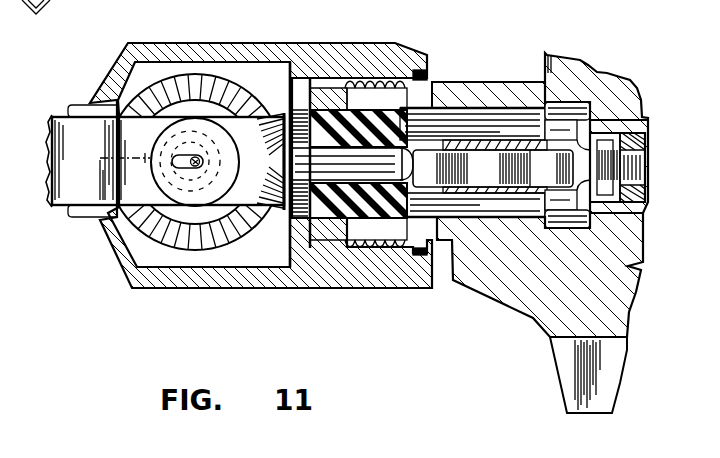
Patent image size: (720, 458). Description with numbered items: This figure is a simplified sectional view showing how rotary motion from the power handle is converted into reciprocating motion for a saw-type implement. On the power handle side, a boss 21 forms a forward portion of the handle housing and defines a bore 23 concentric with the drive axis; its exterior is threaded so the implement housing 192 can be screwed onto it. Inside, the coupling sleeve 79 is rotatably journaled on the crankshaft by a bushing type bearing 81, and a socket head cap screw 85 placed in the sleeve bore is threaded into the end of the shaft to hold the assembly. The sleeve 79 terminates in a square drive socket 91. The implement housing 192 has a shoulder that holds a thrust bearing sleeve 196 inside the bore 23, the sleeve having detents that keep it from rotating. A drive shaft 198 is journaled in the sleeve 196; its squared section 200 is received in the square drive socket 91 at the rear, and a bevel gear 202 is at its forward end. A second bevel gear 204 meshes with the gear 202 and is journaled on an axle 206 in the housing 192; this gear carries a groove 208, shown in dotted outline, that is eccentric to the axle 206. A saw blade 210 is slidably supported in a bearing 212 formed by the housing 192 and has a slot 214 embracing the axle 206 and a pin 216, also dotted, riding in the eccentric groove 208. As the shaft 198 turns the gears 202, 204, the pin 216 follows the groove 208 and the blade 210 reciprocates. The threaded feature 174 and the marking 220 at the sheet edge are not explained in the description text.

The adjacent figure reference 220 is at (25, 43).
The saw blade 210 is at (50, 115).
The groove 208 is at (116, 137).
The slot 214 is at (188, 154).
The pin 216 is at (104, 158).
The axle 206 is at (186, 168).
The bearing 212 is at (82, 217).
The second bevel gear 204 is at (185, 232).
The bevel gear 202 is at (275, 210).
The housing 192 is at (313, 273).
The thrust bearing sleeve 196 is at (370, 207).
The drive shaft 198 is at (369, 162).
The threads 174 is at (377, 82).
The bore 23 is at (453, 93).
The squared section 200 is at (483, 163).
The square drive socket 91 is at (505, 185).
The boss 21 is at (485, 273).
The socket head cap screw 85 is at (610, 158).
The bushing type bearing 81 is at (633, 133).
The coupling sleeve 79 is at (608, 213).